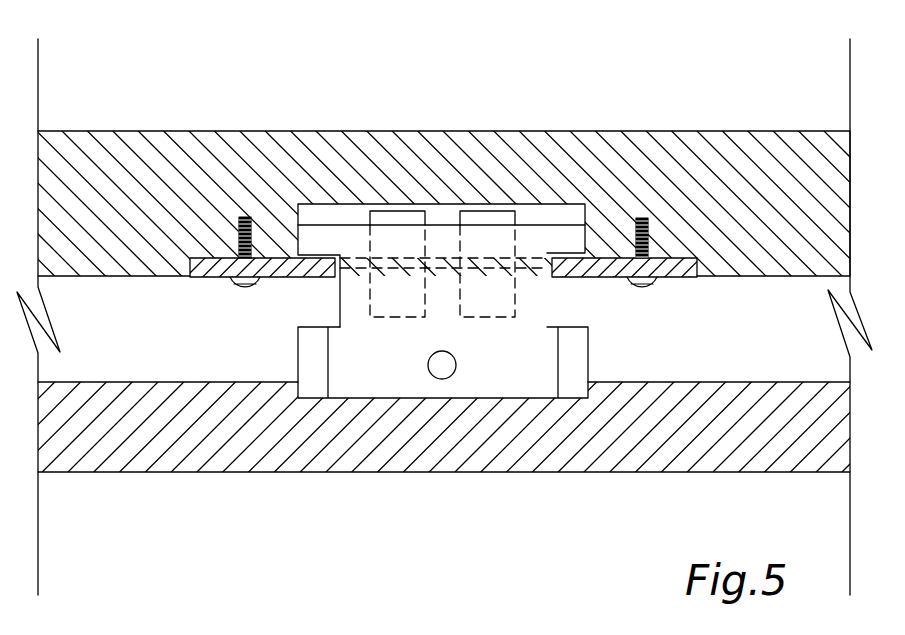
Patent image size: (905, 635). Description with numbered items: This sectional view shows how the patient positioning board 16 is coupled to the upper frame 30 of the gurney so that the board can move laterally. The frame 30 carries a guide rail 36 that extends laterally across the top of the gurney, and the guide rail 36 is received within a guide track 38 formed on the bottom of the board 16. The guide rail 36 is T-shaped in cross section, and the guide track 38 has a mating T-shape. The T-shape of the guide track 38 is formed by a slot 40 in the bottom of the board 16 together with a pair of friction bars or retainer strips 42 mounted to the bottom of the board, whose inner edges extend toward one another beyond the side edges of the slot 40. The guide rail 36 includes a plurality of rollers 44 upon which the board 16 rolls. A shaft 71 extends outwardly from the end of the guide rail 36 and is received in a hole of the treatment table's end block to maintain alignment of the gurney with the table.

The patient positioning board 16 is at (128, 142).
The upper frame 30 is at (340, 467).
The guide rail 36 is at (535, 338).
The guide track 38 is at (560, 213).
The slot 40 is at (305, 214).
The retainer strip 42 is at (217, 272).
The roller 44 is at (482, 217).
The shaft 71 is at (437, 367).